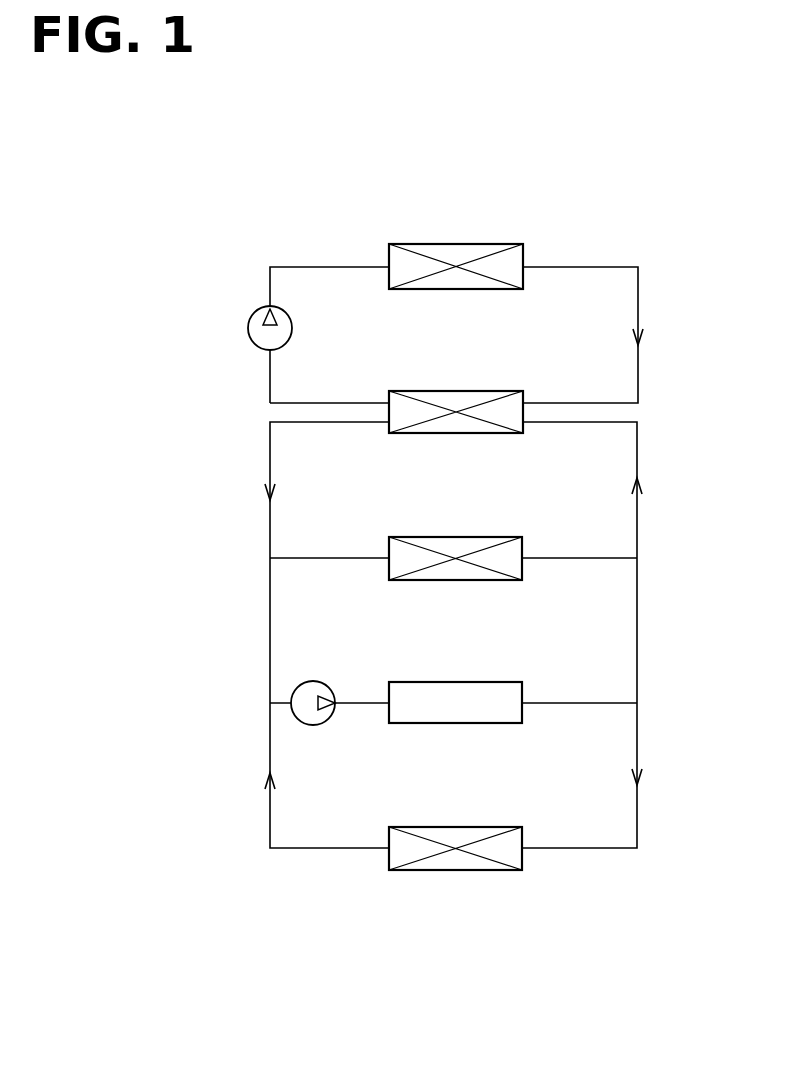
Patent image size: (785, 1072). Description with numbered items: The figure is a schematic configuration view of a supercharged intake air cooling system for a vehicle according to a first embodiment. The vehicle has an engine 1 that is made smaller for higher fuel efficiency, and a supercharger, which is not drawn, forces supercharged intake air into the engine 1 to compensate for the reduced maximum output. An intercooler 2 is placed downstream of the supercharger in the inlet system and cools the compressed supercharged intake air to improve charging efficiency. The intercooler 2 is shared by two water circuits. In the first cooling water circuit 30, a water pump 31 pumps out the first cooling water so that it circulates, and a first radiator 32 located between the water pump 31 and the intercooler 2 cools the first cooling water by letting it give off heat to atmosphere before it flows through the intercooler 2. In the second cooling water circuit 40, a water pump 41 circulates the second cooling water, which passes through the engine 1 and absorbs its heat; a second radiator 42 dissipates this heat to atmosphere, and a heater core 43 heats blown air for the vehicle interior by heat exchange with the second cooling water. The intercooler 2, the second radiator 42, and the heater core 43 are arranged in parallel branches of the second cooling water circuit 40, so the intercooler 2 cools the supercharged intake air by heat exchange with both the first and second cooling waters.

The engine 1 is at (502, 726).
The intercooler 2 is at (497, 436).
The first cooling water circuit 30 is at (325, 264).
The water pump 31 is at (249, 323).
The first radiator 32 is at (470, 244).
The second cooling water circuit 40 is at (637, 623).
The water pump 41 is at (313, 725).
The second radiator 42 is at (479, 872).
The heater core 43 is at (500, 582).